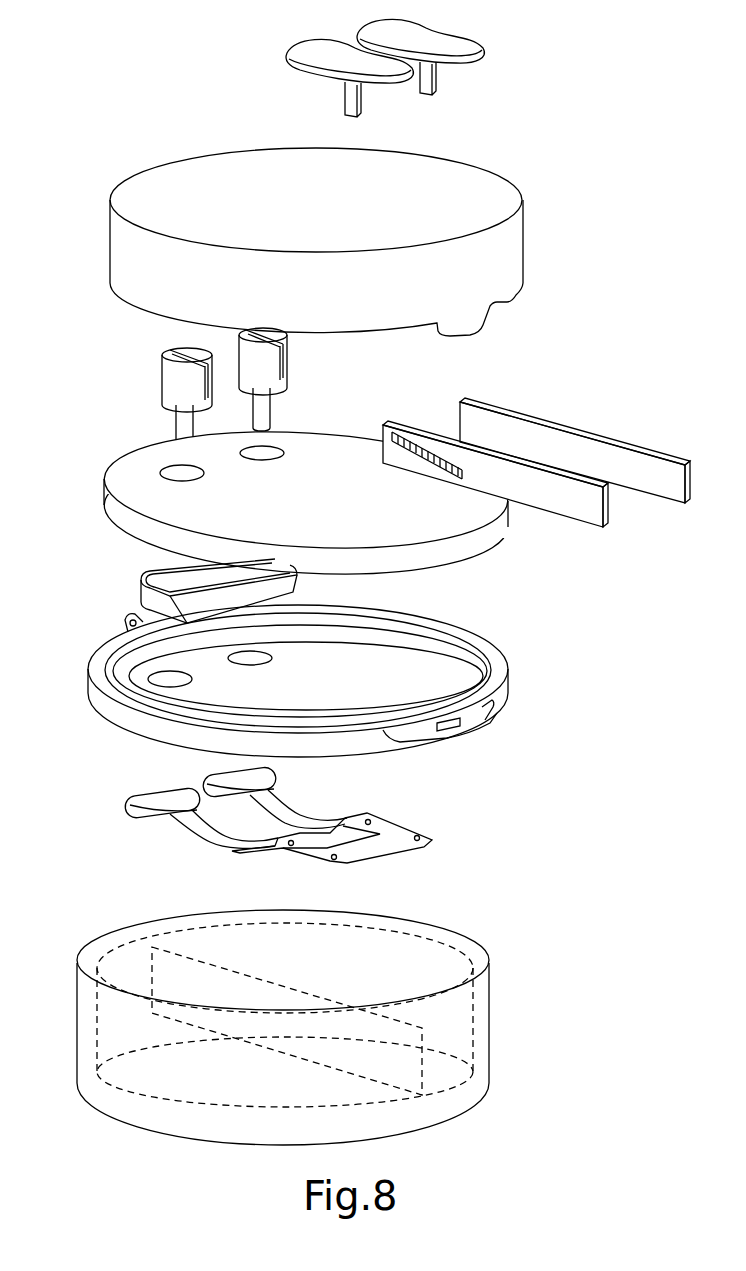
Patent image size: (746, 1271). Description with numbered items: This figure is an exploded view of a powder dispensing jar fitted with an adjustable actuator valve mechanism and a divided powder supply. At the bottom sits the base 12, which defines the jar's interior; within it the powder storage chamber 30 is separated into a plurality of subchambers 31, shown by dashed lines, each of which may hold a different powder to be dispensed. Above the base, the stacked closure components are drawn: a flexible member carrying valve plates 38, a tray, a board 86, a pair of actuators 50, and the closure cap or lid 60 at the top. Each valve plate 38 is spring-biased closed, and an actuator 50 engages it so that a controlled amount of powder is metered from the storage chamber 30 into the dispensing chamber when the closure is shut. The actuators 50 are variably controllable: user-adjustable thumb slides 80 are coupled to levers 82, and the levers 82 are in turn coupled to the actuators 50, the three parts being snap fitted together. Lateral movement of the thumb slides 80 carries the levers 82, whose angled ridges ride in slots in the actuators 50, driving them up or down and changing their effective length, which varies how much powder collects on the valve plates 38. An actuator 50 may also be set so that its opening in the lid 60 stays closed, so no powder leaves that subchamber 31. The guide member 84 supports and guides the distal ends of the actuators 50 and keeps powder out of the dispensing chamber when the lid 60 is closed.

The base 12 is at (317, 1041).
The powder storage chamber 30 is at (227, 1085).
The subchambers 31 is at (380, 968).
The valve plate 38 is at (213, 776).
The actuator 50 is at (240, 336).
The closure cap 60 is at (523, 200).
The thumb slides 80 is at (480, 52).
The levers 82 is at (545, 438).
The guide member 84 is at (141, 584).
The board 86 is at (498, 536).